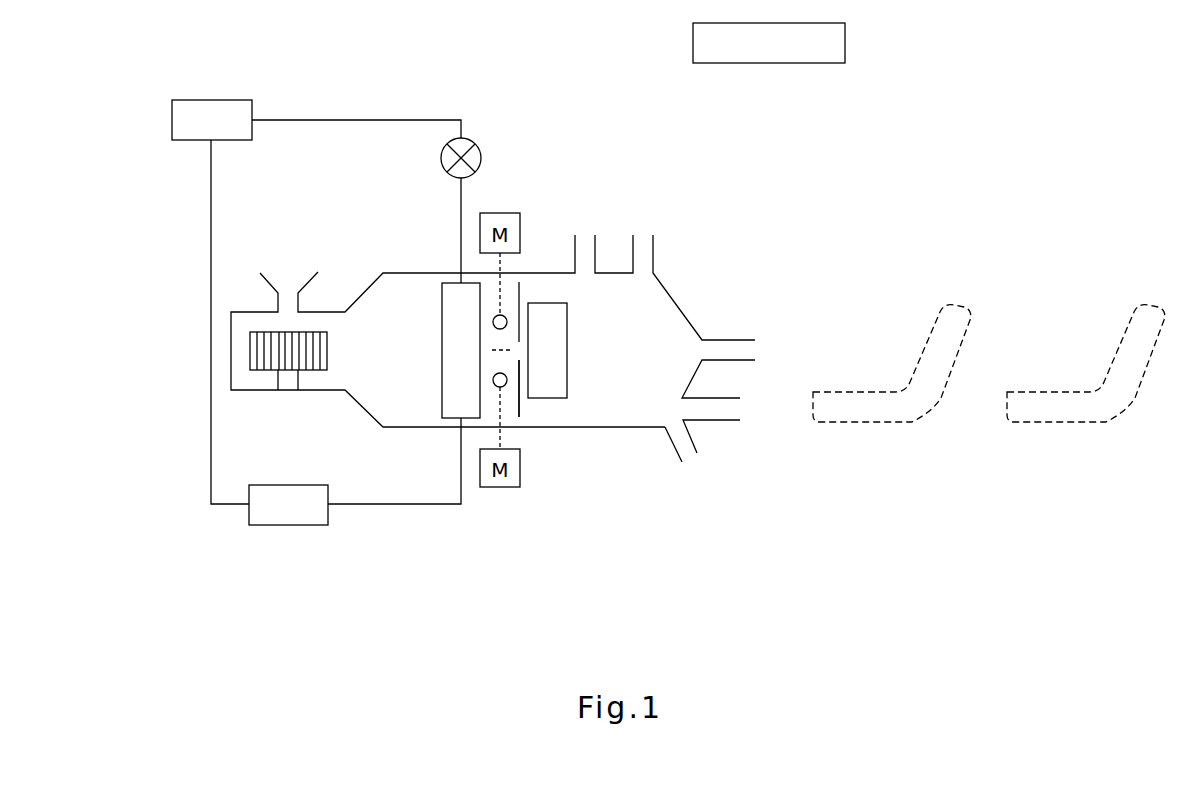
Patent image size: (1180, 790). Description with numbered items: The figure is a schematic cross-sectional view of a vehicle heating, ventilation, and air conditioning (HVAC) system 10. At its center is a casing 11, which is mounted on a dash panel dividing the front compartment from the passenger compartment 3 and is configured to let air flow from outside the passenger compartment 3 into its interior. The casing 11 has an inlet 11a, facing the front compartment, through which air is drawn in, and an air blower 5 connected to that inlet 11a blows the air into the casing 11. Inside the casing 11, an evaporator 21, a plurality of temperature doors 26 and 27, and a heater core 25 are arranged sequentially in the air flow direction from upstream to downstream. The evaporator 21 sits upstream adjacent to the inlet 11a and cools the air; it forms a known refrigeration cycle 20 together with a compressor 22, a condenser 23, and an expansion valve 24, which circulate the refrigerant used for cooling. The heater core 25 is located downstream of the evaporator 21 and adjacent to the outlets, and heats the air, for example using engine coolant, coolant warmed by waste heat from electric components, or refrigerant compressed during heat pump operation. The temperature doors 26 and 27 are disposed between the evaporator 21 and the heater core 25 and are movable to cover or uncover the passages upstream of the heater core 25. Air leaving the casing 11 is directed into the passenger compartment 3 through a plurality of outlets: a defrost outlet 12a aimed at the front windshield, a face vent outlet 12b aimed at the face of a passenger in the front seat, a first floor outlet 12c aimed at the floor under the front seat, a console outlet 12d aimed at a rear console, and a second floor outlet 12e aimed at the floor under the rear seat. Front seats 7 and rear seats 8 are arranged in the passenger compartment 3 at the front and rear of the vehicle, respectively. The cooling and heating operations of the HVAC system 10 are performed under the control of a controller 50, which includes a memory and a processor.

The passenger compartment 3 is at (818, 286).
The air blower 5 is at (250, 349).
The front seats 7 is at (957, 305).
The rear seats 8 is at (1148, 305).
The vehicle heating, ventilation, and air conditioning (HVAC) system 10 is at (537, 262).
The casing 11 is at (400, 272).
The inlet 11a is at (412, 365).
The defrost outlet 12a is at (585, 247).
The face vent outlet 12b is at (641, 247).
The first floor outlet 12c is at (730, 352).
The console outlet 12d is at (723, 408).
The second floor outlet 12e is at (680, 440).
The refrigeration cycle 20 is at (352, 105).
The evaporator 21 is at (442, 405).
The compressor 22 is at (287, 527).
The condenser 23 is at (170, 120).
The expansion valve 24 is at (481, 156).
The heater core 25 is at (568, 351).
The temperature door 26 is at (521, 292).
The temperature door 27 is at (520, 410).
The controller 50 is at (848, 43).